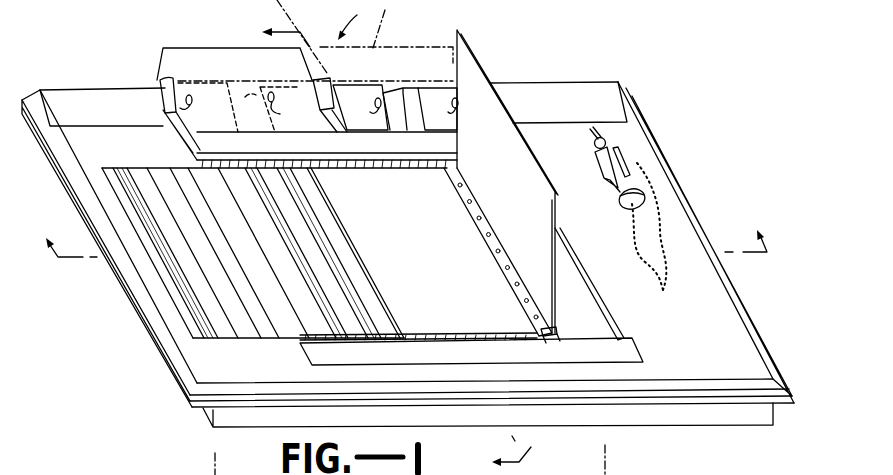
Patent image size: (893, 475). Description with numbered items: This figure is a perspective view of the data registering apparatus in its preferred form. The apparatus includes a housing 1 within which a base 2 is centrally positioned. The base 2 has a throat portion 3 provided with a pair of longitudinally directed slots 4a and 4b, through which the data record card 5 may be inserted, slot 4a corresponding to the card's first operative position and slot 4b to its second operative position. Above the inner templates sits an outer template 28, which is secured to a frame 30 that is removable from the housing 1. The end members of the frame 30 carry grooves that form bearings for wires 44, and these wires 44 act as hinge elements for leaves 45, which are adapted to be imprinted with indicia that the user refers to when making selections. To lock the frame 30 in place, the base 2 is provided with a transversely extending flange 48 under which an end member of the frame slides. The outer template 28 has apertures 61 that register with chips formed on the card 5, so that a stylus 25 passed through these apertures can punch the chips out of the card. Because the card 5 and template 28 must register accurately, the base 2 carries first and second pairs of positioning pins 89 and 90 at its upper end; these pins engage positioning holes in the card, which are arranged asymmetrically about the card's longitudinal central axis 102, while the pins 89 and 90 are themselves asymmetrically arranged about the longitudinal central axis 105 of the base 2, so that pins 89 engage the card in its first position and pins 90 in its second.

The housing 1 is at (740, 348).
The base 2 is at (402, 231).
The throat portion 3 is at (388, 237).
The slot 4a is at (260, 132).
The slot 4b is at (386, 95).
The data record card 5 is at (197, 57).
The stylus 25 is at (603, 143).
The outer template 28 is at (547, 338).
The frame 30 is at (630, 347).
The wires 44 is at (403, 163).
The leaves 45 is at (127, 180).
The transversely extending flange 48 is at (207, 142).
The apertures 61 is at (553, 332).
The first pair of positioning pins 89 is at (171, 110).
The second pair of positioning pins 90 is at (395, 107).
The longitudinal central axis of card 102 is at (213, 466).
The longitudinal central axis of base 105 is at (300, 1).